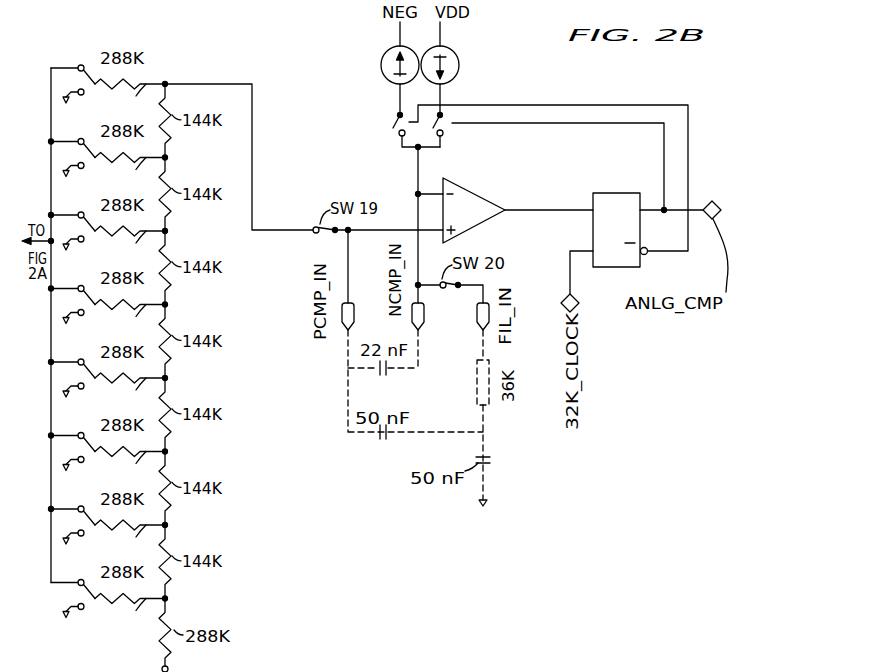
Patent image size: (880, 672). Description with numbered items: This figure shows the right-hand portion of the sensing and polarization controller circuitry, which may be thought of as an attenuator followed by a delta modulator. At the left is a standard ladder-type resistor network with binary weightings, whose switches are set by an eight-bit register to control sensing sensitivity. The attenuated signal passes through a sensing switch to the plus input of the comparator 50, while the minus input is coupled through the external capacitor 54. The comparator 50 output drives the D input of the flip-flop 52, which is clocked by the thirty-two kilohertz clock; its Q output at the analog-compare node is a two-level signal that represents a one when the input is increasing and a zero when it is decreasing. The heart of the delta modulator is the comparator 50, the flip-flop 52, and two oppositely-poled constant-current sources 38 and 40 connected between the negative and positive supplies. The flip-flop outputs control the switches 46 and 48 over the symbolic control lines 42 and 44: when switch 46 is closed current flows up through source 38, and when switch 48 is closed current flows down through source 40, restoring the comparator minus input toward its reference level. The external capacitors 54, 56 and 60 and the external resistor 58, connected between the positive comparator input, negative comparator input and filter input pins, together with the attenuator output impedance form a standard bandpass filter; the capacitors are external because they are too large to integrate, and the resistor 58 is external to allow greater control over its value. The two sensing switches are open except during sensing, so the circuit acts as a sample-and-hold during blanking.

The constant-current source 38 is at (389, 58).
The constant-current source 40 is at (458, 52).
The control line 42 is at (503, 105).
The control line 44 is at (528, 123).
The switch 46 is at (381, 130).
The switch 48 is at (446, 132).
The comparator 50 is at (470, 192).
The flip-flop 52 is at (607, 193).
The capacitor 54 is at (389, 374).
The capacitor 56 is at (386, 437).
The resistor 58 is at (475, 397).
The capacitor 60 is at (489, 458).